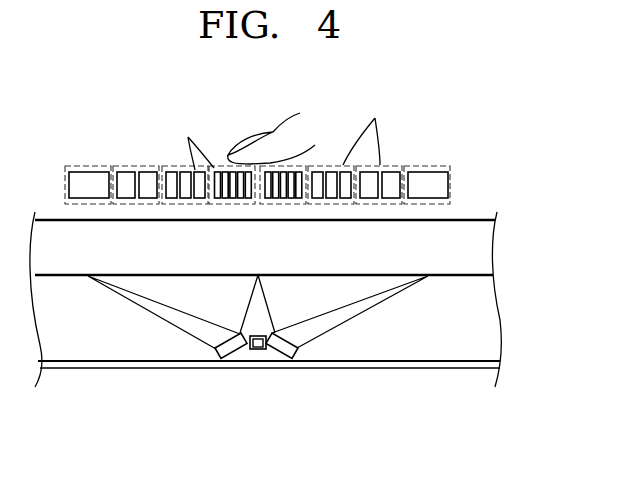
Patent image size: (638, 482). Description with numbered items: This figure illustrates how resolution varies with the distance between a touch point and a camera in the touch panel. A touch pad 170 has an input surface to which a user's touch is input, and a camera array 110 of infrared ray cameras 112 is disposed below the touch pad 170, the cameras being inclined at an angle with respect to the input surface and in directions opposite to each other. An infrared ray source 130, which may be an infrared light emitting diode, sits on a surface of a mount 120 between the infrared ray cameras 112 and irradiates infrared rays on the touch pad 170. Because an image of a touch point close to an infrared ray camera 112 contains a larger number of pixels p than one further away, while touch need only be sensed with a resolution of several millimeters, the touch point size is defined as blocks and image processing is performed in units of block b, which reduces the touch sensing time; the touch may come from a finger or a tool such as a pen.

The touch pad 170 is at (475, 250).
The camera array 110 is at (200, 383).
The infrared ray camera 112 is at (228, 356).
The mount 120 is at (255, 353).
The infrared ray source 130 is at (288, 384).
The pixel p is at (198, 142).
The block b is at (366, 129).